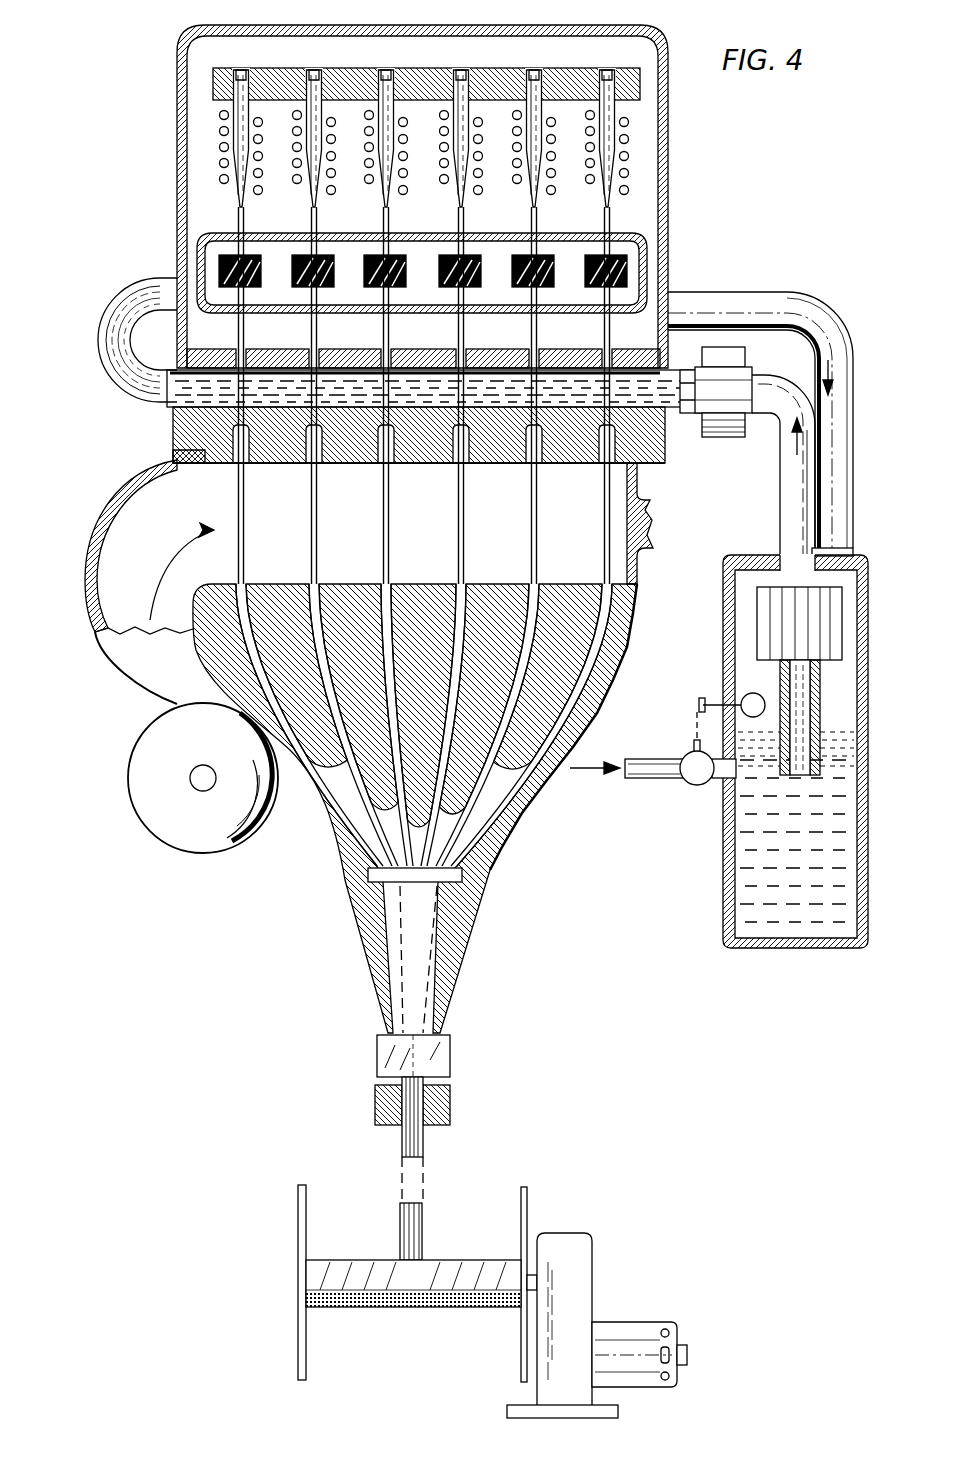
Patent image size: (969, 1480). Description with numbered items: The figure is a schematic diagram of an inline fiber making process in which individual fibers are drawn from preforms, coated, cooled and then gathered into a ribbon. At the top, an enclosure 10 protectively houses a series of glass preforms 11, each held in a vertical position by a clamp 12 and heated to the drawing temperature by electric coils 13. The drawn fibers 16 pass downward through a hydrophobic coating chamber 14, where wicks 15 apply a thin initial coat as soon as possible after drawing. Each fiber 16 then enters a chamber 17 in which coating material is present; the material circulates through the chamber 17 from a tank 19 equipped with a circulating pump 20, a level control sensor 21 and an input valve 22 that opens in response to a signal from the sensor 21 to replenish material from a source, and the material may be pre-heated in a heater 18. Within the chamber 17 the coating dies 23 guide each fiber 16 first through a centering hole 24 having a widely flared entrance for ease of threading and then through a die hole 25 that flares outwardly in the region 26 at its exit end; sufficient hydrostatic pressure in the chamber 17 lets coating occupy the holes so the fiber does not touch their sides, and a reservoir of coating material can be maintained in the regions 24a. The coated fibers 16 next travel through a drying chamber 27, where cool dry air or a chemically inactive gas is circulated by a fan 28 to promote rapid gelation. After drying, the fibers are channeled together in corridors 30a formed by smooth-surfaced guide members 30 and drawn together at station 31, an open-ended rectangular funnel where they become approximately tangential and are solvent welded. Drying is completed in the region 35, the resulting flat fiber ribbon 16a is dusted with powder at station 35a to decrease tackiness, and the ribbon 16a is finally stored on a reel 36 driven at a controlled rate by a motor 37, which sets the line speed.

The enclosure 10 is at (440, 28).
The glass preform 11 is at (322, 106).
The clamp 12 is at (410, 52).
The electric coils 13 is at (405, 187).
The hydrophobic coating chamber 14 is at (560, 236).
The wicks 15 is at (365, 270).
The fibers 16 is at (383, 228).
The fiber ribbon 16a is at (423, 1140).
The chamber 17 is at (433, 398).
The heater 18 is at (722, 437).
The tank 19 is at (757, 554).
The circulating pump 20 is at (828, 672).
The level control sensor 21 is at (762, 676).
The input valve 22 is at (690, 781).
The coating dies 23 is at (324, 369).
The centering hole 24 is at (240, 352).
The regions 24a is at (615, 336).
The die hole 25 is at (235, 388).
The region 26 is at (231, 463).
The drying chamber 27 is at (425, 516).
The fan 28 is at (150, 797).
The guide members 30 is at (430, 637).
The corridors 30a is at (372, 584).
The station 31 is at (445, 905).
The region 35 is at (450, 1055).
The station 35a is at (450, 1103).
The reel 36 is at (527, 1198).
The motor 37 is at (656, 1322).